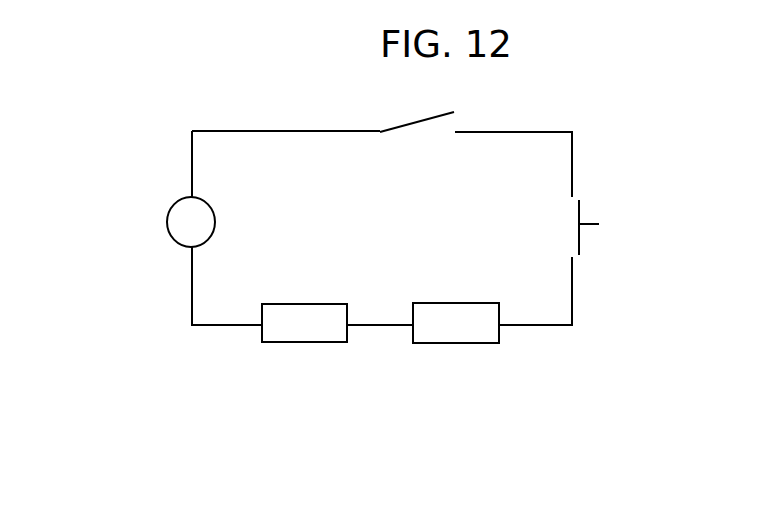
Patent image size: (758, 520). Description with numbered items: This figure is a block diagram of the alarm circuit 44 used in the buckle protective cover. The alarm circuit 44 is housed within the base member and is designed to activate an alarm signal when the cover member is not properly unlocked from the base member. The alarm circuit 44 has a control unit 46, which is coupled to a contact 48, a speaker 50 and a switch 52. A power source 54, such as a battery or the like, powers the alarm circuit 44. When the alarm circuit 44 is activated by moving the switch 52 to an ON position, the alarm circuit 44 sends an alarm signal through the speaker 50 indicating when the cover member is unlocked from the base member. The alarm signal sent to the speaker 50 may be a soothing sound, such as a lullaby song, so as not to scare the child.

The alarm circuit 44 is at (150, 403).
The control unit 46 is at (458, 344).
The contact 48 is at (579, 215).
The speaker 50 is at (304, 345).
The switch 52 is at (417, 115).
The power source 54 is at (166, 238).